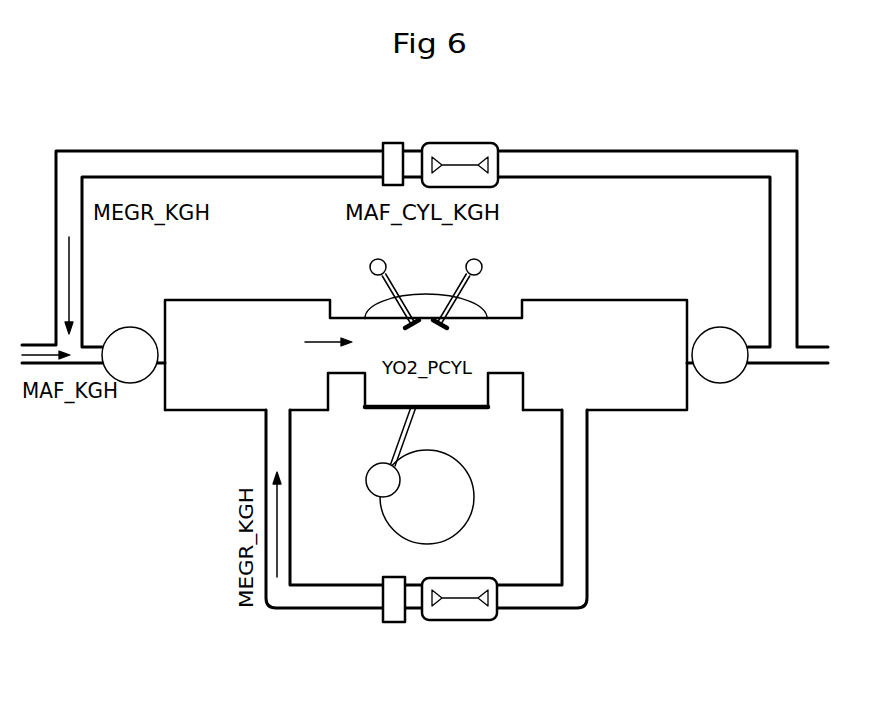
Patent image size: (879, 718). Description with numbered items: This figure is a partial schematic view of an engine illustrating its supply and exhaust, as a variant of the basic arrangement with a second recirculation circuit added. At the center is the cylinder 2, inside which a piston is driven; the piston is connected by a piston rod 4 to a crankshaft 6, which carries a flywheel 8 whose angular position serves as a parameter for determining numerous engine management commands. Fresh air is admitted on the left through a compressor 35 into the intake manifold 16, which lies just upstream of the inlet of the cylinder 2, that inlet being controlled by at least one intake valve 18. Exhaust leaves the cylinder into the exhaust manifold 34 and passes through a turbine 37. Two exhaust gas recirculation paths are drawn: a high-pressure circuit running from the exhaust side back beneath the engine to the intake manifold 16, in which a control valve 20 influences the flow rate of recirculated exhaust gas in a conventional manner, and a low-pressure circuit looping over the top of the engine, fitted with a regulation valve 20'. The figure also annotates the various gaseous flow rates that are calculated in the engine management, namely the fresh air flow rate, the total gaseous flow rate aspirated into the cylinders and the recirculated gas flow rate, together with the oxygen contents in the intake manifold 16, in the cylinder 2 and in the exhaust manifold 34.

The cylinder 2 is at (453, 395).
The piston rod 4 is at (390, 457).
The crankshaft 6 is at (377, 485).
The flywheel 8 is at (460, 517).
The intake manifold 16 is at (176, 388).
The intake valve 18 is at (372, 277).
The control valve 20 is at (473, 630).
The regulation valve 20' is at (475, 135).
The exhaust manifold 34 is at (613, 310).
The compressor 35 is at (131, 343).
The turbine 37 is at (733, 368).